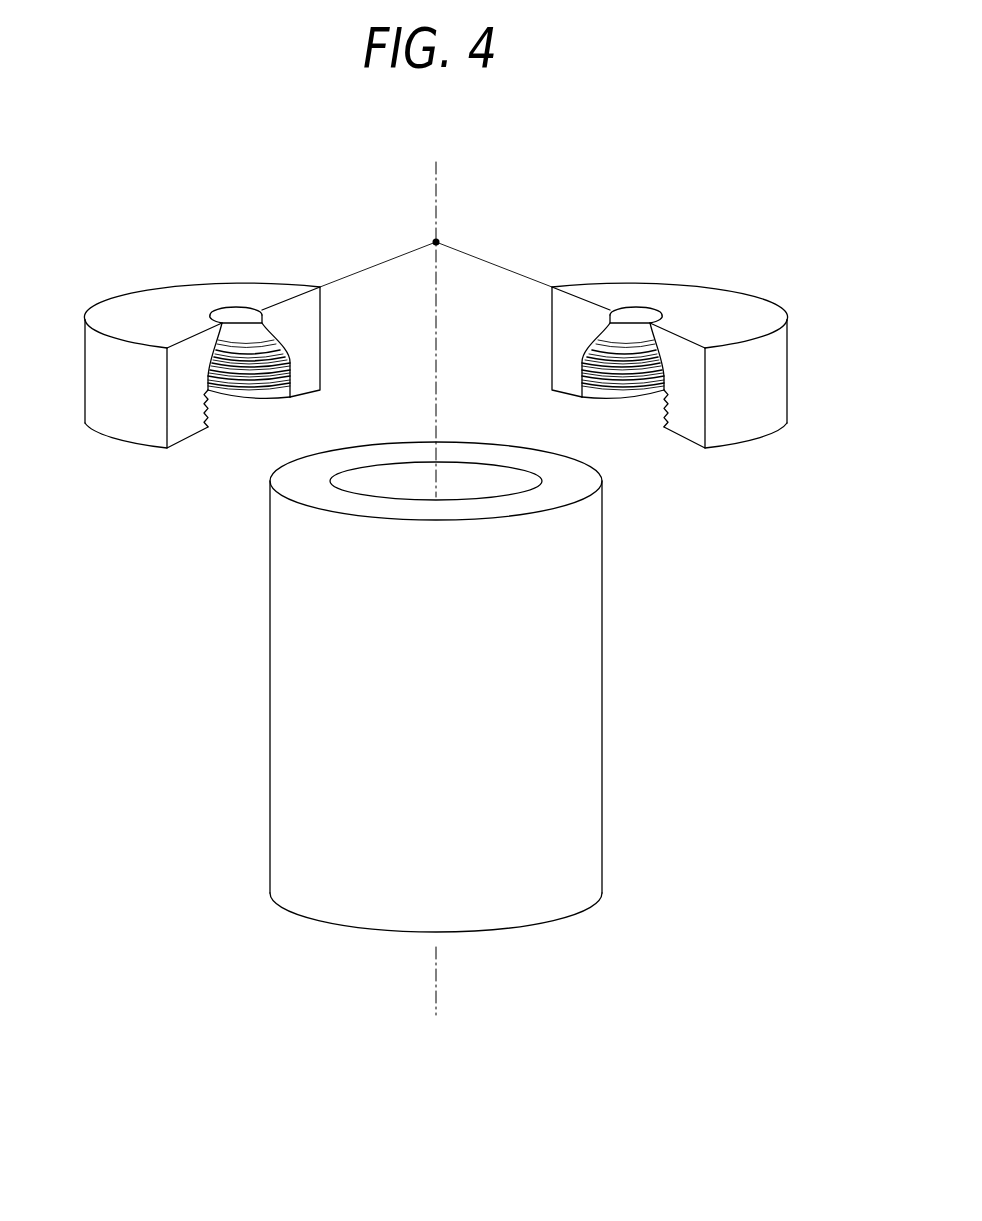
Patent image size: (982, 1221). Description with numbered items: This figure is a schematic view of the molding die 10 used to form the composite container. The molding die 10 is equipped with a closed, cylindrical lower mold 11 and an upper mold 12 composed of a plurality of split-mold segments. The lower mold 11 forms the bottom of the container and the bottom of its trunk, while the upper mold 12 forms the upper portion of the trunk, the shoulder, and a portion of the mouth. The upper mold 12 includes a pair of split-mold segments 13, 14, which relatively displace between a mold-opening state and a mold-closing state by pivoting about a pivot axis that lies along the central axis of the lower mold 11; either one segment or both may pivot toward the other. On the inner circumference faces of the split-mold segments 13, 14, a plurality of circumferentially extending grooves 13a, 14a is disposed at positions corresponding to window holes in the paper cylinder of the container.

The molding die 10 is at (593, 200).
The lower mold 11 is at (578, 683).
The upper mold 12 is at (435, 341).
The split-mold segment 13 is at (168, 285).
The grooves 13a is at (252, 382).
The split-mold segment 14 is at (678, 284).
The grooves 14a is at (626, 380).